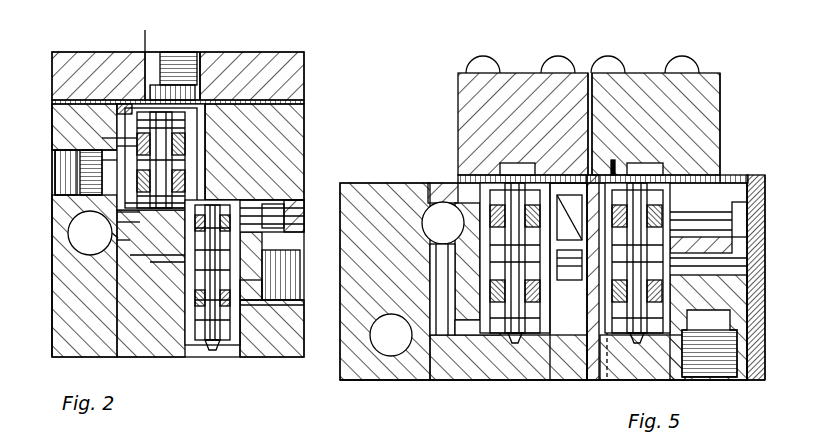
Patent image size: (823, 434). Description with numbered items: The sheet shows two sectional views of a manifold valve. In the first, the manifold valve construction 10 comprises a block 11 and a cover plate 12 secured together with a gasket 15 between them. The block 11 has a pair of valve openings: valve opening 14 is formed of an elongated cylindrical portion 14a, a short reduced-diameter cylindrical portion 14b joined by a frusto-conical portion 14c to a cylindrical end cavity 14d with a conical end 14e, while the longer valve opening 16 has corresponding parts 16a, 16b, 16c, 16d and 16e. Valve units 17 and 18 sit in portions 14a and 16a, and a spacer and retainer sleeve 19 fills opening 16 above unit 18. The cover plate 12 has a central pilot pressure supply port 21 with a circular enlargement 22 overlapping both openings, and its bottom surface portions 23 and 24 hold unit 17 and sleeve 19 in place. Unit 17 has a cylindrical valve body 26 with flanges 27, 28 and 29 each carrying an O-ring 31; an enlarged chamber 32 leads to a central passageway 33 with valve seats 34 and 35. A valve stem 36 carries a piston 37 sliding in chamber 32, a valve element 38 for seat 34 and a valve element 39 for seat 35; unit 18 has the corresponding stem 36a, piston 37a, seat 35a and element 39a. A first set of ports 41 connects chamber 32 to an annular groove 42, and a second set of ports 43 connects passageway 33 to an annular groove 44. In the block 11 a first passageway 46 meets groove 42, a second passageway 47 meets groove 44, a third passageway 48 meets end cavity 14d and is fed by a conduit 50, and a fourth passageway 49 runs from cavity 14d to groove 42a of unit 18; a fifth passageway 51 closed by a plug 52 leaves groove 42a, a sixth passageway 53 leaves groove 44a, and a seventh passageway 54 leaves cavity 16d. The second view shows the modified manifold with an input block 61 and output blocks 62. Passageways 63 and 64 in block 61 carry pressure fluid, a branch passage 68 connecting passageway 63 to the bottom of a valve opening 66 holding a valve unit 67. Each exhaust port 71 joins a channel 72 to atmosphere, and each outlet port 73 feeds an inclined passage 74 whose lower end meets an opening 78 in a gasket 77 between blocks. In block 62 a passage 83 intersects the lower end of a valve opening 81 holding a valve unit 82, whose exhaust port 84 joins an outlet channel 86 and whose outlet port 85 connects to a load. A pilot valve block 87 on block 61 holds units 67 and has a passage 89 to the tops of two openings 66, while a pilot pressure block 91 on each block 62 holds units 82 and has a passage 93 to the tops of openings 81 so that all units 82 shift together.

In FIG. 2, the manifold valve construction 10 is at (30, 70).
In FIG. 2, the block 11 is at (53, 282).
In FIG. 2, the cover plate 12 is at (281, 56).
In FIG. 2, the valve opening 14 is at (136, 130).
In FIG. 2, the elongated cylindrical portion 14a is at (118, 212).
In FIG. 2, the short cylindrical portion of reduced diameter 14b is at (68, 224).
In FIG. 2, the frusto-conical portion 14c is at (130, 256).
In FIG. 2, the cylindrical end cavity 14d is at (150, 264).
In FIG. 2, the conical end 14e is at (195, 262).
In FIG. 2, the gasket 15 is at (58, 102).
In FIG. 2, the valve opening 16 is at (238, 186).
In FIG. 2, the elongated cylindrical portion 16a is at (196, 306).
In FIG. 2, the short cylindrical portion of reduced diameter 16b is at (200, 330).
In FIG. 2, the frusto-conical portion 16c is at (208, 342).
In FIG. 2, the cylindrical end cavity 16d is at (222, 318).
In FIG. 2, the conical end 16e is at (247, 328).
In FIG. 2, the valve unit 17 is at (112, 154).
In FIG. 2, the valve unit 18 is at (300, 231).
In FIG. 2, the cylindrical spacer and retainer sleeve 19 is at (235, 152).
In FIG. 2, the central pilot pressure supply port 21 is at (179, 53).
In FIG. 2, the circular enlargement 22 is at (146, 56).
In FIG. 2, the bottom surface portion of cover plate 23 is at (138, 110).
In FIG. 2, the bottom surface portion of cover plate 24 is at (214, 100).
In FIG. 2, the cylindrical valve body 26 is at (178, 150).
In FIG. 2, the flange 27 is at (167, 157).
In FIG. 2, the flange 28 is at (161, 141).
In FIG. 2, the flange 29 is at (161, 187).
In FIG. 2, the O-ring 31 is at (161, 202).
In FIG. 2, the enlarged chamber 32 is at (122, 138).
In FIG. 2, the central passageway 33 is at (66, 172).
In FIG. 2, the valve seat 34 is at (125, 148).
In FIG. 2, the valve seat 35 is at (125, 222).
In FIG. 2, the valve seat 35a is at (272, 306).
In FIG. 2, the valve stem 36 is at (78, 172).
In FIG. 2, the valve stem 36a is at (281, 275).
In FIG. 2, the piston 37 is at (117, 103).
In FIG. 2, the piston 37a is at (237, 173).
In FIG. 2, the valve element 38 is at (175, 114).
In FIG. 2, the valve element 39 is at (188, 250).
In FIG. 2, the valve element 39a is at (192, 320).
In FIG. 2, the first set of ports 41 is at (193, 140).
In FIG. 2, the annular groove 42 is at (161, 140).
In FIG. 2, the annular groove 42a is at (238, 210).
In FIG. 2, the second set of ports 43 is at (194, 175).
In FIG. 2, the annular groove 44 is at (160, 175).
In FIG. 2, the annular groove 44a is at (195, 296).
In FIG. 2, the first passageway 46 is at (86, 137).
In FIG. 2, the second passageway 47 is at (110, 200).
In FIG. 2, the third passageway 48 is at (118, 240).
In FIG. 2, the fourth passageway 49 is at (195, 282).
In FIG. 2, the conduit 50 is at (68, 242).
In FIG. 2, the fifth passageway 51 is at (286, 206).
In FIG. 2, the plug 52 is at (296, 214).
In FIG. 2, the sixth passageway 53 is at (251, 289).
In FIG. 2, the seventh passageway 54 is at (283, 289).
In FIG. 5, the input block 61 is at (392, 183).
In FIG. 5, the output block 62 is at (750, 178).
In FIG. 5, the passageway 63 is at (424, 221).
In FIG. 5, the passageway 64 is at (384, 326).
In FIG. 5, the valve opening 66 is at (457, 184).
In FIG. 5, the valve unit 67 is at (478, 177).
In FIG. 5, the branch passage 68 is at (440, 272).
In FIG. 5, the exhaust port 71 is at (568, 281).
In FIG. 5, the channel 72 is at (585, 174).
In FIG. 5, the outlet port 73 is at (572, 271).
In FIG. 5, the passage 74 is at (556, 352).
In FIG. 5, the gasket 77 is at (590, 381).
In FIG. 5, the opening 78 is at (553, 381).
In FIG. 5, the valve opening 81 is at (693, 178).
In FIG. 5, the valve unit 82 is at (613, 172).
In FIG. 5, the passage 83 is at (608, 381).
In FIG. 5, the exhaust port 84 is at (735, 210).
In FIG. 5, the outlet port 85 is at (712, 380).
In FIG. 5, the outlet channel 86 is at (763, 192).
In FIG. 5, the pilot valve block 87 is at (470, 88).
In FIG. 5, the passage 89 is at (517, 164).
In FIG. 5, the pilot pressure block 91 is at (637, 74).
In FIG. 5, the passage 93 is at (652, 164).